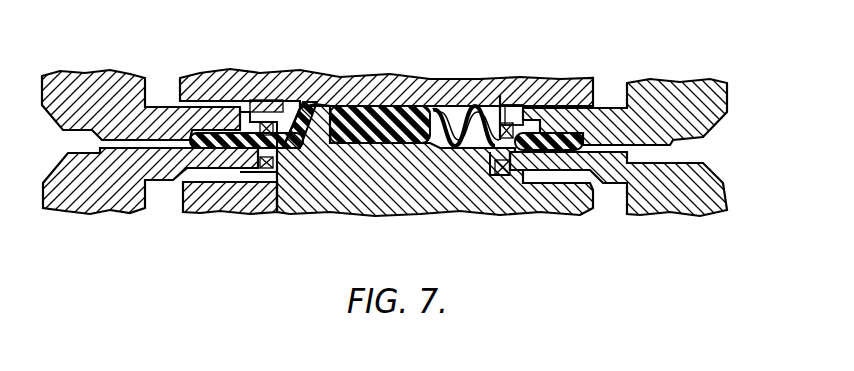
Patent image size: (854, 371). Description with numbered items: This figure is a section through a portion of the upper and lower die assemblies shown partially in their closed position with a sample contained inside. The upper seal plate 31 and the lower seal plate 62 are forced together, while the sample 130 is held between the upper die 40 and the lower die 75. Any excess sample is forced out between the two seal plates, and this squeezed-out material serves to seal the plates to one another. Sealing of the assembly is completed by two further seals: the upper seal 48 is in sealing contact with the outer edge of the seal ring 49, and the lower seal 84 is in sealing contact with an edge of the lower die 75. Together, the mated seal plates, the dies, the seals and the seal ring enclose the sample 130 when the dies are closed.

The upper seal plate 31 is at (728, 90).
The upper die 40 is at (445, 78).
The upper seal 48 is at (503, 120).
The seal ring 49 is at (512, 105).
The lower seal plate 62 is at (720, 175).
The lower die 75 is at (375, 216).
The lower seal 84 is at (493, 165).
The sample 130 is at (365, 112).